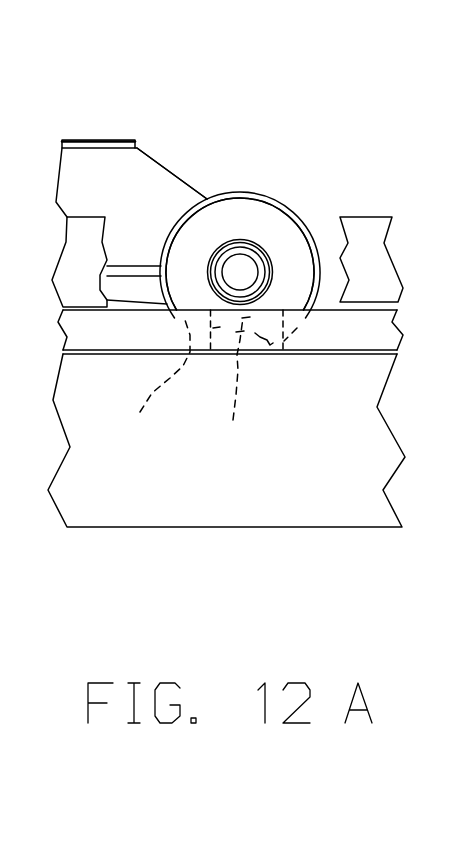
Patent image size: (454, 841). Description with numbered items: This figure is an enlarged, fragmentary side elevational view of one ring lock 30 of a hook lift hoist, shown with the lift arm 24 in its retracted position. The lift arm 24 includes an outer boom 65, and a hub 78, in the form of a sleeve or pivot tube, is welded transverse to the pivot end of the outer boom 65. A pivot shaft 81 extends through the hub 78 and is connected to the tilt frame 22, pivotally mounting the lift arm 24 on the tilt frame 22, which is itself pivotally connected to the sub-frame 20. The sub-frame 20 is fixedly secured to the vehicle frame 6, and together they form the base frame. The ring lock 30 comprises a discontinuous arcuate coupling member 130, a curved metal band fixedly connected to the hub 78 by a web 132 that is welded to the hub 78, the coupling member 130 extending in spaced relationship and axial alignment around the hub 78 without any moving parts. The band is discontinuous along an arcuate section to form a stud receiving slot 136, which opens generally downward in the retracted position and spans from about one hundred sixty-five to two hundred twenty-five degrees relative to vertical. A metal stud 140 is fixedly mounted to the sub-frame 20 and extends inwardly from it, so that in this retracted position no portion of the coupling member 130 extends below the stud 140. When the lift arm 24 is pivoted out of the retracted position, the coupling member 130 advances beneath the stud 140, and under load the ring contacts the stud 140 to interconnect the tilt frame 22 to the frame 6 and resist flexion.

The frame 6 is at (303, 510).
The sub-frame 20 is at (342, 335).
The tilt frame 22 is at (80, 229).
The lift arm 24 is at (92, 140).
The ring lock 30 is at (222, 189).
The outer boom 65 is at (145, 181).
The hub 78 is at (215, 250).
The pivot shaft 81 is at (249, 261).
The discontinuous arcuate coupling member 130 is at (270, 197).
The web 132 is at (238, 212).
The stud receiving slot 136 is at (204, 388).
The stud 140 is at (234, 387).